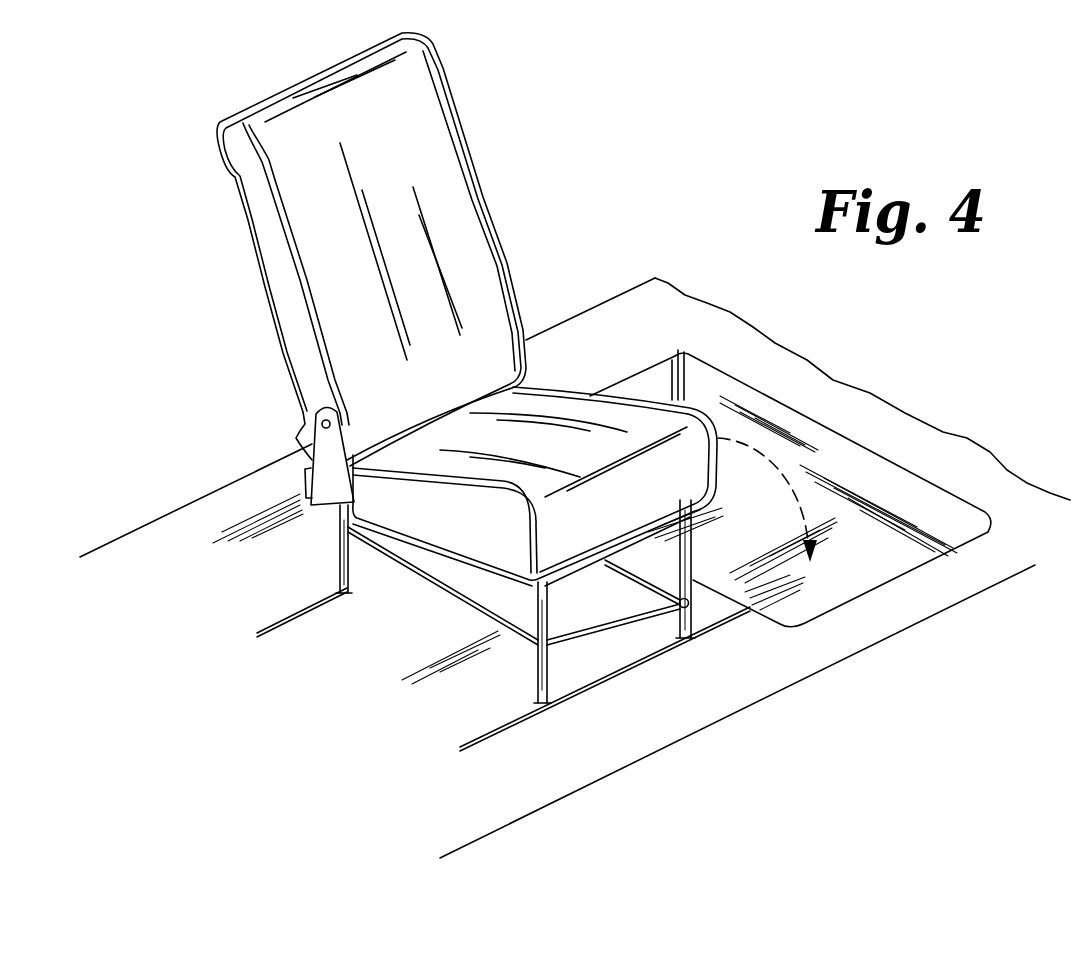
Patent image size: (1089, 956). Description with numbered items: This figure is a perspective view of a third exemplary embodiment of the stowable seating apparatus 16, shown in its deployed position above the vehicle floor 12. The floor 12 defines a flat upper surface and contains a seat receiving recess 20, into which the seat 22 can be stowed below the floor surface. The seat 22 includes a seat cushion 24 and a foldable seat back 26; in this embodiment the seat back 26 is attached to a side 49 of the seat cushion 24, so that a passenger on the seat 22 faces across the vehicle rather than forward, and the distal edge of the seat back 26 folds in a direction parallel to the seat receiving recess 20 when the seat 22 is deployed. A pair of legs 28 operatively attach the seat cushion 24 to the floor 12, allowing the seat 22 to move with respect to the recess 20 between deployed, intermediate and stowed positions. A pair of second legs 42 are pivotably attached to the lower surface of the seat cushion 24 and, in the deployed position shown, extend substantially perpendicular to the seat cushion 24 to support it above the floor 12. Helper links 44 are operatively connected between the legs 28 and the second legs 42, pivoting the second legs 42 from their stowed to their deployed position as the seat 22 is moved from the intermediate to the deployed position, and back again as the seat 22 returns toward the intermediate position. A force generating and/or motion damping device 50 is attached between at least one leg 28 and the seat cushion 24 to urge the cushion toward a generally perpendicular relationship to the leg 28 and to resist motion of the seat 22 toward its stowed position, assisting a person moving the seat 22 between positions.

The floor 12 is at (553, 787).
The third row seating apparatus 16 is at (250, 337).
The seat receiving recess 20 is at (781, 440).
The seat 22 is at (522, 245).
The seat cushion 24 is at (420, 460).
The foldable seat back 26 is at (467, 198).
The legs 28 is at (693, 585).
The second legs 42 is at (340, 563).
The helper links 44 is at (427, 580).
The side of the seat cushion 49 is at (302, 480).
The force generating device 50 is at (693, 548).